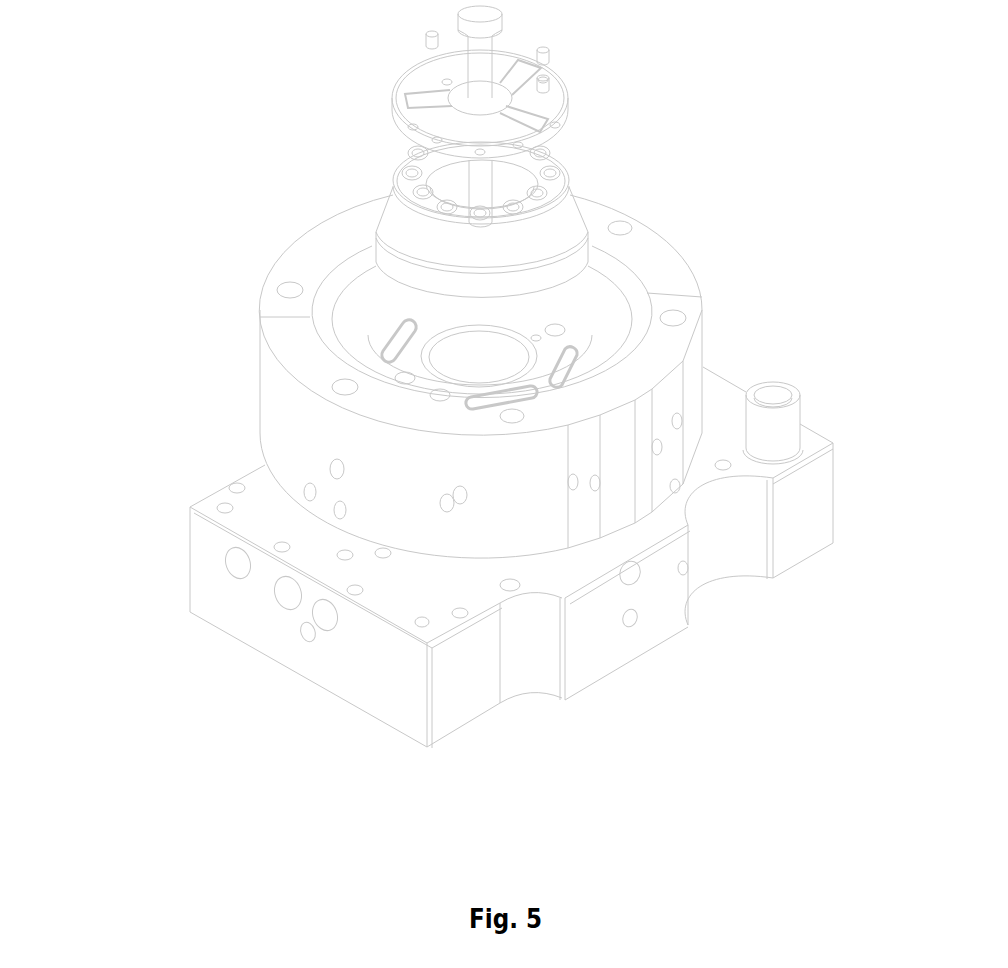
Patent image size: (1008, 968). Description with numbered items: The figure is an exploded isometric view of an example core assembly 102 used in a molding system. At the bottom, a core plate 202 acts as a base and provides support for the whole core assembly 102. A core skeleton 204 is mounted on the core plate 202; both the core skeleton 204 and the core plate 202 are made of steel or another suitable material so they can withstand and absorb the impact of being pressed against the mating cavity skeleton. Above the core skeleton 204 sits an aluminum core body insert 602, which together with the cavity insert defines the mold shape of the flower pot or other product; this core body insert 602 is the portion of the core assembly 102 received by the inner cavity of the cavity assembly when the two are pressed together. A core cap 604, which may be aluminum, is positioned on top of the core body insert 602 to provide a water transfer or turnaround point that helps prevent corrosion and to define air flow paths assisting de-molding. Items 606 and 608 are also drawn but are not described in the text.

The core assembly 102 is at (248, 188).
The core plate 202 is at (187, 558).
The core skeleton 204 is at (263, 397).
The core body insert 602 is at (575, 202).
The core cap 604 is at (567, 106).
The shaft 606 is at (472, 60).
The boss 608 is at (797, 417).